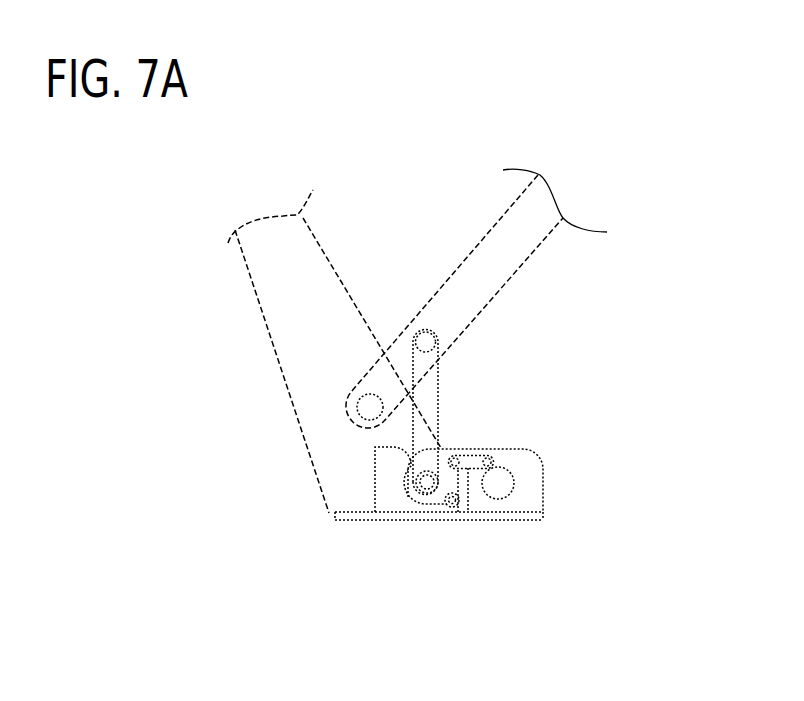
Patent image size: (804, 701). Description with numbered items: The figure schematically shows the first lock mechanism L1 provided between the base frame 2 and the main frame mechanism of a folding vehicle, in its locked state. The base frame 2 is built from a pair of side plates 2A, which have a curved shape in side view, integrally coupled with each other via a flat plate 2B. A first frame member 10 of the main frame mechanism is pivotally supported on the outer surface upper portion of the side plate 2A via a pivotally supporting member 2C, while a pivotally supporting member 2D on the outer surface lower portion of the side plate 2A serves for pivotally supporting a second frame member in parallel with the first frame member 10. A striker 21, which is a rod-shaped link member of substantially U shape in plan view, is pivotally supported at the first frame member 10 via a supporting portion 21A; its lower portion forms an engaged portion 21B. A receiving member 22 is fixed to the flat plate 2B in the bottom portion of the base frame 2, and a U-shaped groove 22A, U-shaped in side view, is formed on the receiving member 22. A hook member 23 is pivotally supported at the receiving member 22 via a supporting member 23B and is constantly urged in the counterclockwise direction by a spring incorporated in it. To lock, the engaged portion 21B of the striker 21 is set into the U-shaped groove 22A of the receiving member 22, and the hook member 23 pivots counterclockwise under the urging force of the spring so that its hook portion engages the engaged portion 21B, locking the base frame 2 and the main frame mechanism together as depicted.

The base frame 2 is at (347, 395).
The side plate 2A is at (289, 342).
The flat plate 2B is at (439, 505).
The pivotally supporting member 2C is at (363, 412).
The pivotally supporting member 2D is at (500, 496).
The first frame member 10 is at (515, 209).
The striker 21 is at (463, 369).
The supporting portion 21A is at (425, 340).
The engaged portion 21B is at (452, 456).
The receiving member 22 is at (363, 504).
The U-shaped groove 22A is at (418, 498).
The hook member 23 is at (432, 534).
The supporting member 23B is at (450, 508).
The first lock mechanism L1 is at (626, 274).